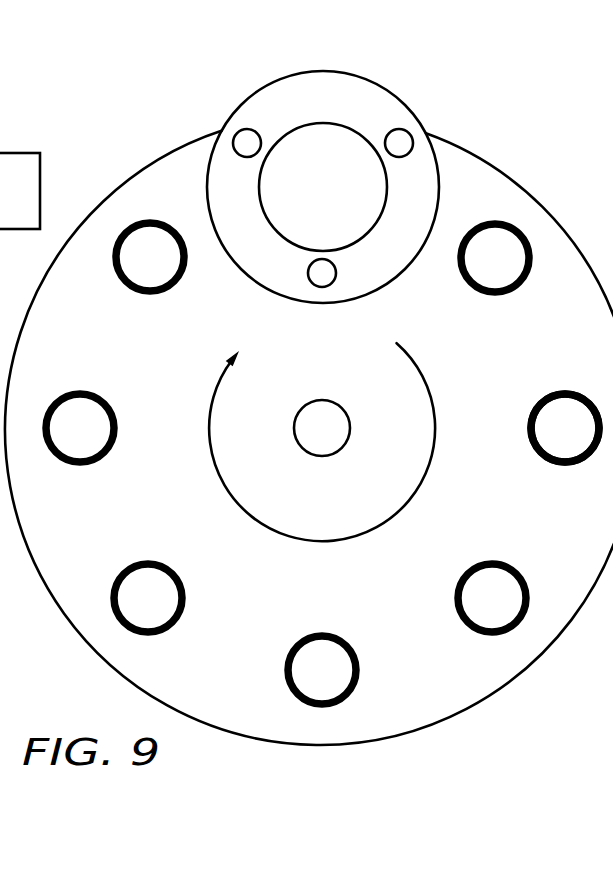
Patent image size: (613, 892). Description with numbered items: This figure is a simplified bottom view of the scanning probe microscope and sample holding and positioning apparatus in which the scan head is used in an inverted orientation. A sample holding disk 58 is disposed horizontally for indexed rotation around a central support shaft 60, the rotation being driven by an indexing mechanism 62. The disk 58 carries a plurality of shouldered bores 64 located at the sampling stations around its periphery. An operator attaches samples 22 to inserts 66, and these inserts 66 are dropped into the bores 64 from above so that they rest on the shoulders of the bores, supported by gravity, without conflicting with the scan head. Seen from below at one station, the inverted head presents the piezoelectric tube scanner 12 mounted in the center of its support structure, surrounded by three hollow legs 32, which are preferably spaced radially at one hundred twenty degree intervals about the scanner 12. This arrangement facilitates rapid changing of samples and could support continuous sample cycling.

The piezoelectric tube scanner 12 is at (342, 127).
The sample 22 is at (565, 445).
The hollow legs 32 is at (239, 133).
The sample holding disk 58 is at (178, 148).
The support shaft 60 is at (317, 424).
The indexing mechanism 62 is at (20, 168).
The shouldered bores 64 is at (512, 290).
The inserts 66 is at (562, 410).